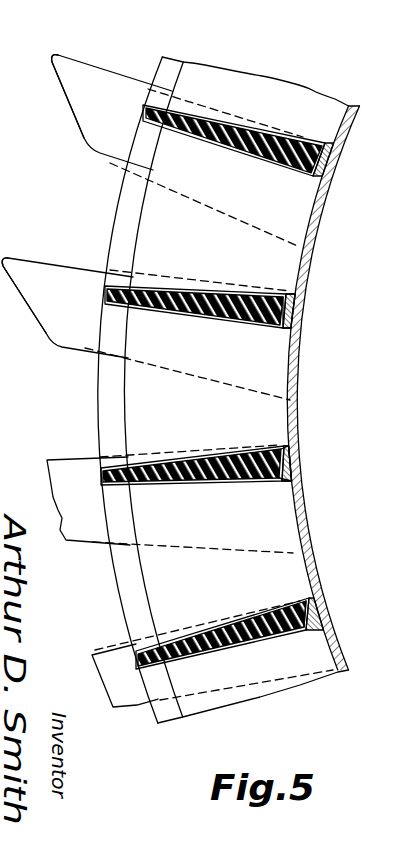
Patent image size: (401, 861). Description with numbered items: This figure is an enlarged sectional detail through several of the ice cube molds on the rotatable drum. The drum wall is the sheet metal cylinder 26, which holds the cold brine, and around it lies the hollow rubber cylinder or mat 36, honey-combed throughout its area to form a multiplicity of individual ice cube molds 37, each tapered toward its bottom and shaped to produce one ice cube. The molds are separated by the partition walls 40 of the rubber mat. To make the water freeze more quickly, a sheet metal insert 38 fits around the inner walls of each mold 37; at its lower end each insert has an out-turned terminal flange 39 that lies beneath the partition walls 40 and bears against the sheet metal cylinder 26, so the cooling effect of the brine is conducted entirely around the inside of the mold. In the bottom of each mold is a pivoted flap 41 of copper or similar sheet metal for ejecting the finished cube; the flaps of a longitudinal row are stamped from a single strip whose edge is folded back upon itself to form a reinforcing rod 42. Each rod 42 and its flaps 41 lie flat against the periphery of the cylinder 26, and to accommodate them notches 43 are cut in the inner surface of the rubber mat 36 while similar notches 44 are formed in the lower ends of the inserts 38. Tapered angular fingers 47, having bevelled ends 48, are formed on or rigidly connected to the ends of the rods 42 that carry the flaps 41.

The sheet metal cylinder 26 is at (312, 527).
The hollow rubber cylinder or mat 36 is at (137, 670).
The ice cube mold 37 is at (152, 112).
The sheet metal insert 38 is at (153, 283).
The out-turned terminal flange 39 is at (293, 316).
The partition wall 40 is at (233, 288).
The pivoted flap 41 is at (316, 238).
The rod 42 is at (288, 461).
The notch 43 is at (308, 177).
The notch 44 is at (288, 293).
The angular finger 47 is at (45, 268).
The bevelled end 48 is at (68, 108).